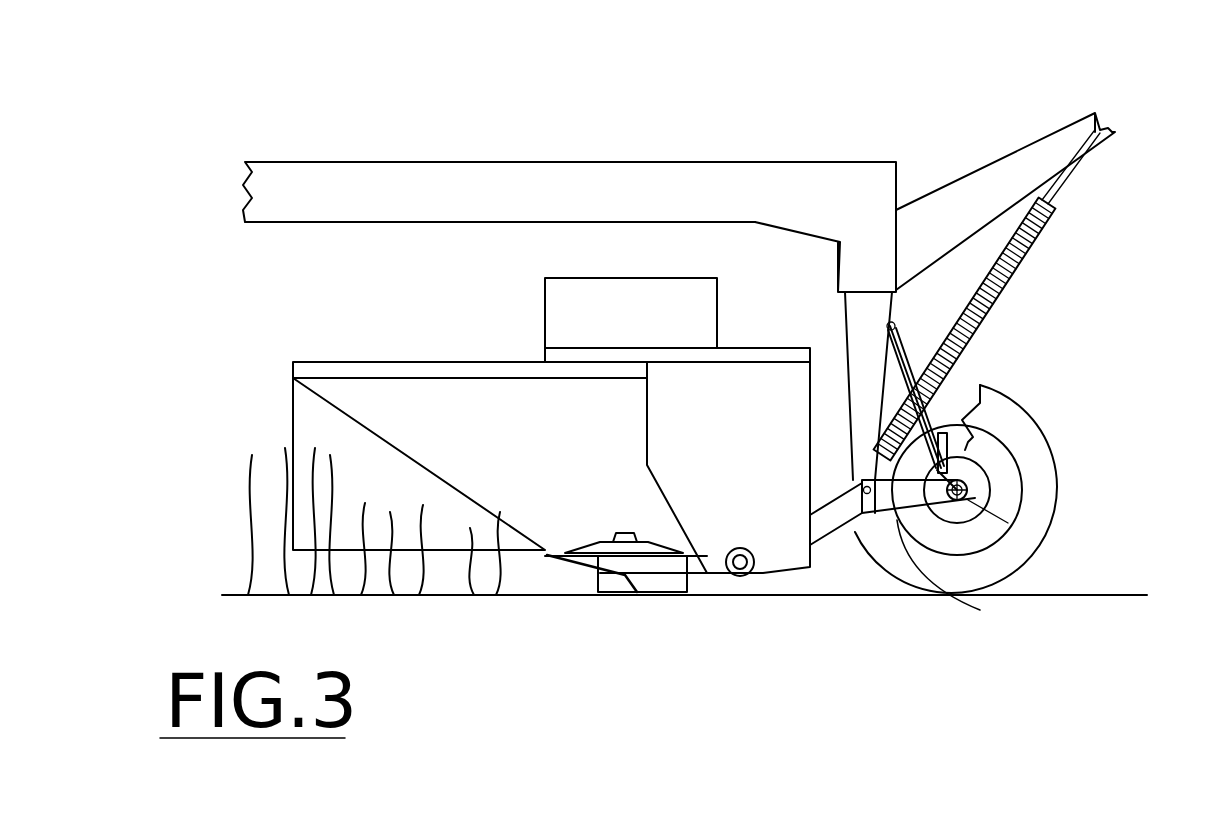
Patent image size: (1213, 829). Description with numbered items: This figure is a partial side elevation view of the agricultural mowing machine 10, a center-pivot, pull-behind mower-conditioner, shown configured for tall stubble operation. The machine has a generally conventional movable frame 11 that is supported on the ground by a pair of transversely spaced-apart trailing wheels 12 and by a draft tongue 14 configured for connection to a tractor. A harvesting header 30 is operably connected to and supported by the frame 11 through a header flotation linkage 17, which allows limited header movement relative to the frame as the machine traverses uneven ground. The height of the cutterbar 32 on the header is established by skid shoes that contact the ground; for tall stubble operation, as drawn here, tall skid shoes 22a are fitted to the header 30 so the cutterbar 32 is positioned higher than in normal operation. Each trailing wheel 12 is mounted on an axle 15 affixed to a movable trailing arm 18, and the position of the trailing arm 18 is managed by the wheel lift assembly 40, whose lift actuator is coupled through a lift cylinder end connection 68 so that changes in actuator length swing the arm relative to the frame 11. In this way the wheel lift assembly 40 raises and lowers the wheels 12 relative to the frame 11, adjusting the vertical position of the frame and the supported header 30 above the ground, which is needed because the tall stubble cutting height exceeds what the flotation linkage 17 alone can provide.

The agricultural mowing machine 10 is at (592, 113).
The movable frame 11 is at (918, 158).
The trailing wheels 12 is at (1027, 435).
The draft tongue 14 is at (424, 162).
The axle 15 is at (1057, 535).
The header flotation linkage 17 is at (845, 596).
The trailing arm 18 is at (905, 498).
The tall skid shoe 22a is at (630, 597).
The harvesting header 30 is at (478, 350).
The cutterbar 32 is at (618, 528).
The wheel lift assembly 40 is at (994, 427).
The lift cylinder end connection 68 is at (912, 312).